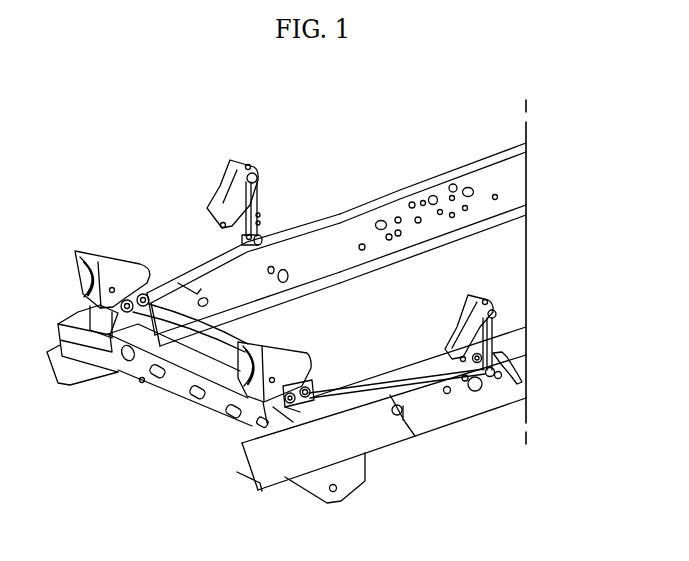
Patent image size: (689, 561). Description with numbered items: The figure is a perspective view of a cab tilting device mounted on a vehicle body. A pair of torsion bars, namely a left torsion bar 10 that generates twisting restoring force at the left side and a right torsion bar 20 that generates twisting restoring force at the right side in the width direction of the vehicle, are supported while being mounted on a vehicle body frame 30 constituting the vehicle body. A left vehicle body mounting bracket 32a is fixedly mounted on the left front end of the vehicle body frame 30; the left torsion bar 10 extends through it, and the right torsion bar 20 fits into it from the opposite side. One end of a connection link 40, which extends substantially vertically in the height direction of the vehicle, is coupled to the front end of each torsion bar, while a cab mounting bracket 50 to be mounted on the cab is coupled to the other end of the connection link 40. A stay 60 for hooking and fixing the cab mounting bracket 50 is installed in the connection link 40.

The left torsion bar 10 is at (345, 387).
The right torsion bar 20 is at (174, 278).
The vehicle body frame 30 is at (400, 188).
The left vehicle body mounting bracket 32a is at (100, 334).
The connection link 40 is at (263, 193).
The cab mounting bracket 50 is at (230, 155).
The stay 60 is at (508, 378).